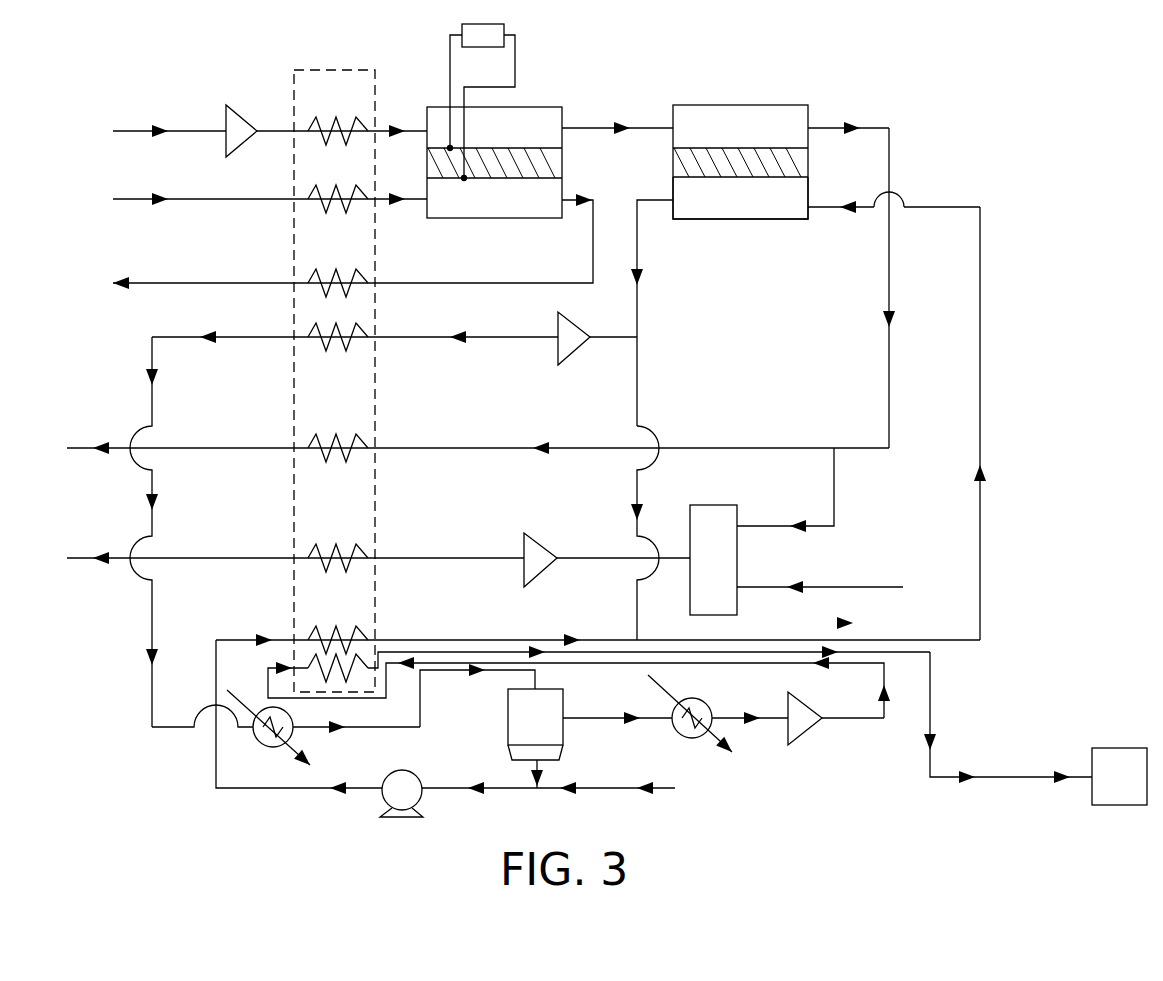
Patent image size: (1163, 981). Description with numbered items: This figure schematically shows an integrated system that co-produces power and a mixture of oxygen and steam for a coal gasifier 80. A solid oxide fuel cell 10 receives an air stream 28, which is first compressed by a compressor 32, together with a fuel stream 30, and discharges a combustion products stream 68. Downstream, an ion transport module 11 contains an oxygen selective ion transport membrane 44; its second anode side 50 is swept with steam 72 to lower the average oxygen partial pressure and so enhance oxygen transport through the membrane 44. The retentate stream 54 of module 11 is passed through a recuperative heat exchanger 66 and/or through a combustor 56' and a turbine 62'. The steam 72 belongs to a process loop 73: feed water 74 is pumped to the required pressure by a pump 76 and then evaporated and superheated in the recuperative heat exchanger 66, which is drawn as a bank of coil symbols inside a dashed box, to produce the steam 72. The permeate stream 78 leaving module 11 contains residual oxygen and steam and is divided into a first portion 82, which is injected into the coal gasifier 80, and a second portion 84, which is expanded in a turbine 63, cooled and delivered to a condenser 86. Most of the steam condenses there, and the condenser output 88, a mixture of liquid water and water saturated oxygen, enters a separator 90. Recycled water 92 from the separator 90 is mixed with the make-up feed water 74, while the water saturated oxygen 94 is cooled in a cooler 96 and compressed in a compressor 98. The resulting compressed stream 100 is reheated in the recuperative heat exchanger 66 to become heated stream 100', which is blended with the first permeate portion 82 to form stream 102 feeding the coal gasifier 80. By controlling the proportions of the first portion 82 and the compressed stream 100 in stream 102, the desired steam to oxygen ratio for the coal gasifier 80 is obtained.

The solid oxide fuel cell 10 is at (487, 218).
The first ion transport reactor 11 is at (700, 100).
The oxygen-containing gas feed 28 is at (140, 133).
The fuel stream 30 is at (178, 200).
The compressor 32 is at (243, 108).
The oxygen selective ion transport membrane 44 is at (680, 165).
The second anode side 50 is at (792, 175).
The retentate stream 54 is at (889, 273).
The combustor 56' is at (796, 531).
The turbine 62' is at (572, 550).
The turbine 63 is at (563, 332).
The recuperative heat exchanger 66 is at (363, 603).
The combustion products stream 68 is at (175, 283).
The steam 72 is at (983, 322).
The process loop 73 is at (1020, 632).
The feed water 74 is at (585, 790).
The pump 76 is at (402, 772).
The permeate stream 78 is at (643, 310).
The coal gasifier 80 is at (1113, 763).
The first portion 82 is at (637, 487).
The second portion 84 is at (617, 342).
The condenser 86 is at (268, 733).
The condenser output 88 is at (378, 730).
The separator 90 is at (525, 717).
The recycled water 92 is at (540, 765).
The water saturated oxygen 94 is at (597, 720).
The cooler 96 is at (673, 740).
The compressor 98 is at (800, 723).
The compressed stream 100 is at (579, 687).
The heated stream 100' is at (649, 626).
The gasifier feed stream 102 is at (930, 680).